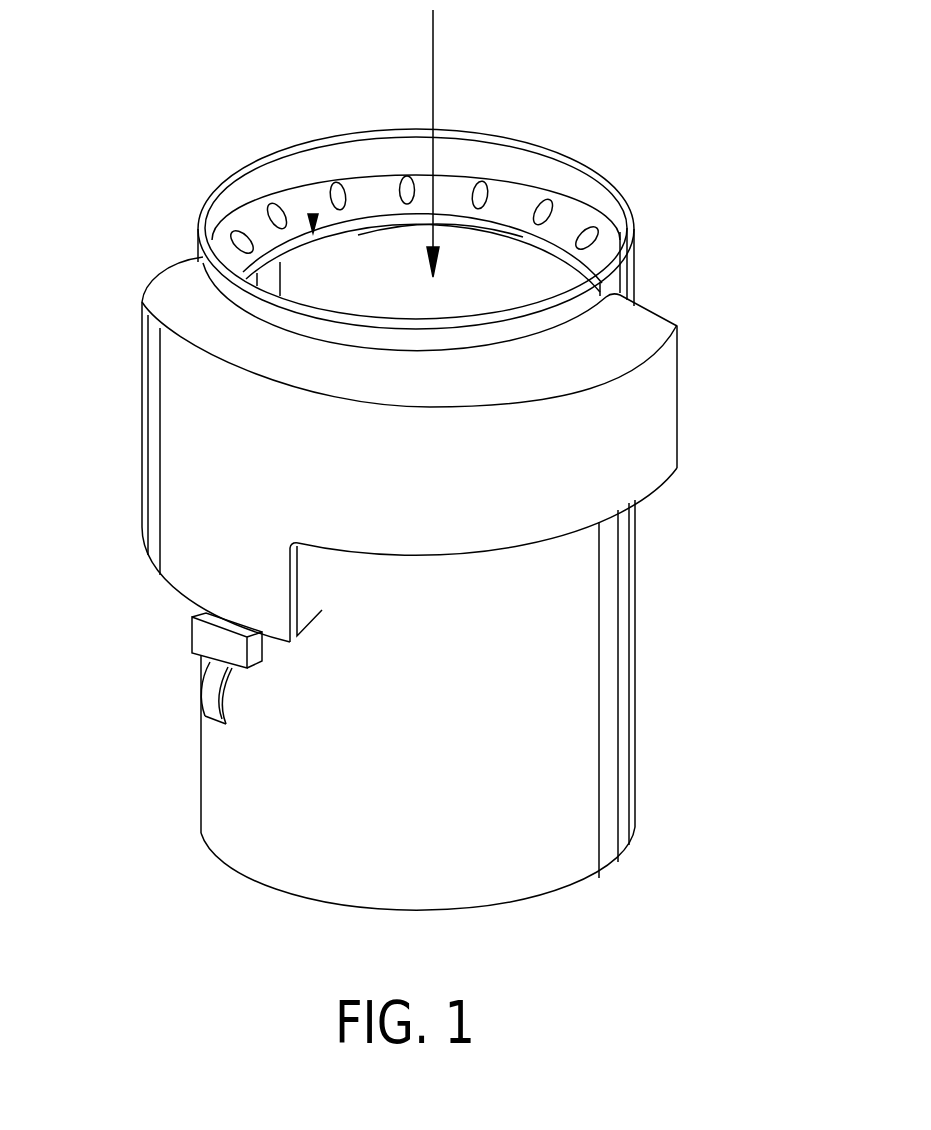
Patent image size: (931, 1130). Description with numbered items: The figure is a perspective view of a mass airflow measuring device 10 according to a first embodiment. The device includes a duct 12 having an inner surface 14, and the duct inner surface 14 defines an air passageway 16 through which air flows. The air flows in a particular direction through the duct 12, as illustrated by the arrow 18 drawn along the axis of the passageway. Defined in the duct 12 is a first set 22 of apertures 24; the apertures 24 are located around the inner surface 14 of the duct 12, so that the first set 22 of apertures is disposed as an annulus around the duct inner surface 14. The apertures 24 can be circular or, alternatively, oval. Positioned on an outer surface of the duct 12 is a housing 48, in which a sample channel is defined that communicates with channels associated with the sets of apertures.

The mass airflow measuring device 10 is at (682, 233).
The duct 12 is at (220, 283).
The inner surface 14 is at (540, 173).
The air passageway 16 is at (383, 150).
The arrow 18 is at (437, 51).
The first set of apertures 22 is at (313, 215).
The apertures 24 is at (587, 227).
The housing 48 is at (653, 398).